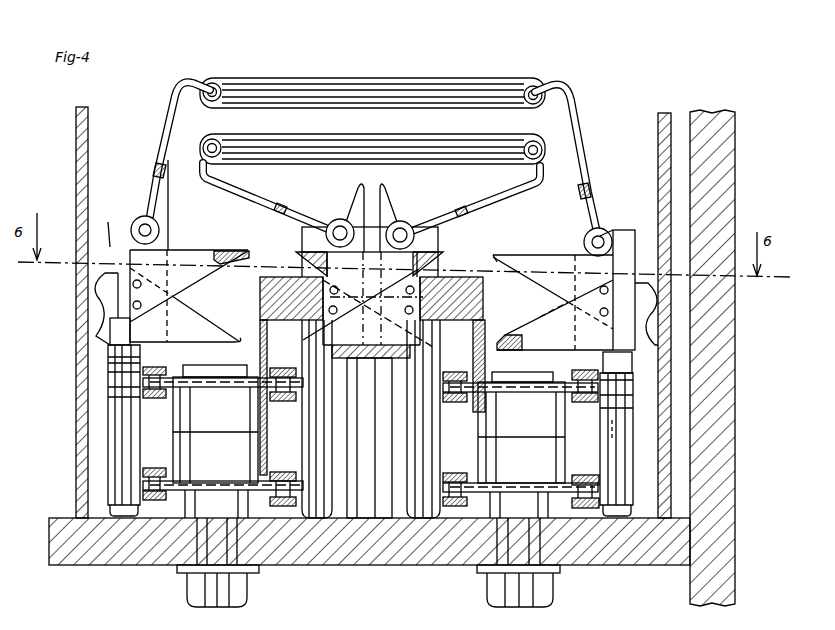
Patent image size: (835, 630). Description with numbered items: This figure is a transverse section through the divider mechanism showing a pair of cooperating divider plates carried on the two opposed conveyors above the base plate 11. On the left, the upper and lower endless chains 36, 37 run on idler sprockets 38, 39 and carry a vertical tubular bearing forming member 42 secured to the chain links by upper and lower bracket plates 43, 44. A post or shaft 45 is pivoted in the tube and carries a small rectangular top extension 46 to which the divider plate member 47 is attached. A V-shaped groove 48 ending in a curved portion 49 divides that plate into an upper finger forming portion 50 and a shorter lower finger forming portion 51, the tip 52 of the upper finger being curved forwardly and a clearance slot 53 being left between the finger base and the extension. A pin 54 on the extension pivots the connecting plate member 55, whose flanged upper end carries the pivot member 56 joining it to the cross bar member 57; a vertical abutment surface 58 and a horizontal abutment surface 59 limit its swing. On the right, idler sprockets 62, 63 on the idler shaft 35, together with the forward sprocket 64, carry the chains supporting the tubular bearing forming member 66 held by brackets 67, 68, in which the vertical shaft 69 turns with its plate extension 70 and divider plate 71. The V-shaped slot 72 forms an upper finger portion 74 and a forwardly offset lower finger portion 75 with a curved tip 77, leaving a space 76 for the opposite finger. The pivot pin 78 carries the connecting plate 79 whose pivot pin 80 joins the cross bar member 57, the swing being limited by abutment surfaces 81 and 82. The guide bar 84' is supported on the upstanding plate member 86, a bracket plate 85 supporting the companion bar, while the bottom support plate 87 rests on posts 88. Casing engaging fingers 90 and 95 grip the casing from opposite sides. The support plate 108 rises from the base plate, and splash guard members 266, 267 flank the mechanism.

The base plate 11 is at (68, 563).
The idler shaft 35 is at (483, 566).
The upper endless chain 36 is at (146, 398).
The lower endless chain 37 is at (150, 468).
The idler sprocket 38 is at (227, 407).
The idler sprocket 39 is at (225, 480).
The tubular bearing forming member 42 is at (108, 420).
The upper bracket plate 43 is at (143, 365).
The lower bracket plate 44 is at (112, 499).
The post or shaft 45 is at (115, 443).
The top extension 46 is at (131, 228).
The divider plate member 47 is at (203, 251).
The V-shaped groove 48 is at (205, 314).
The curved portion 49 is at (177, 298).
The upper finger forming portion 50 is at (208, 252).
The lower finger forming portion 51 is at (216, 327).
The tip 52 is at (248, 252).
The clearance slot 53 is at (250, 580).
The pin 54 is at (137, 216).
The connecting plate member 55 is at (226, 155).
The pivot member 56 is at (212, 101).
The cross bar member 57 is at (338, 108).
The vertical abutment surface 58 is at (156, 188).
The horizontal abutment surface 59 is at (133, 222).
The idler sprocket 62 is at (535, 403).
The idler sprocket 63 is at (528, 479).
The sprocket 64 is at (287, 276).
The tubular bearing forming member 66 is at (610, 452).
The bracket 67 is at (600, 377).
The bracket 68 is at (600, 506).
The vertical shaft 69 is at (610, 425).
The plate extension 70 is at (630, 250).
The divider plate 71 is at (503, 257).
The V-shaped slot 72 is at (533, 318).
The upper finger portion 74 is at (540, 257).
The lower finger portion 75 is at (535, 348).
The space 76 is at (552, 308).
The tip 77 is at (512, 334).
The pivot pin 78 is at (601, 228).
The connecting plate 79 is at (516, 157).
The pivot pin 80 is at (547, 118).
The vertical abutment surface 81 is at (590, 194).
The horizontal abutment surface 82 is at (617, 234).
The guide bar 84' is at (448, 286).
The bracket plate 85 is at (265, 340).
The upstanding plate member 86 is at (477, 347).
The bottom support plate 87 is at (356, 347).
The post 88 is at (362, 485).
The casing engaging finger 90 is at (100, 288).
The casing engaging finger 95 is at (649, 288).
The support plate 108 is at (728, 410).
The splash guard member 266 is at (658, 132).
The splash guard member 267 is at (88, 110).